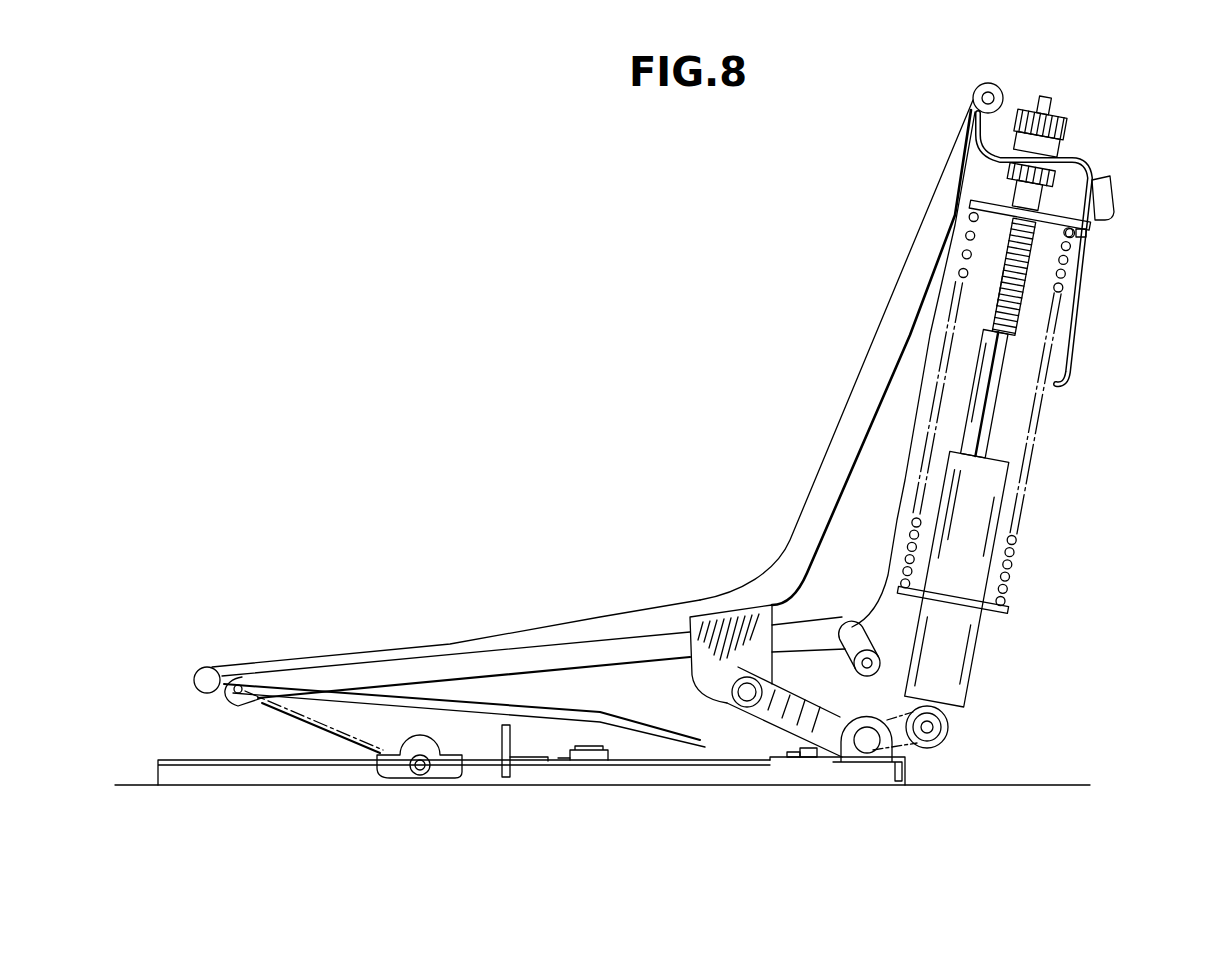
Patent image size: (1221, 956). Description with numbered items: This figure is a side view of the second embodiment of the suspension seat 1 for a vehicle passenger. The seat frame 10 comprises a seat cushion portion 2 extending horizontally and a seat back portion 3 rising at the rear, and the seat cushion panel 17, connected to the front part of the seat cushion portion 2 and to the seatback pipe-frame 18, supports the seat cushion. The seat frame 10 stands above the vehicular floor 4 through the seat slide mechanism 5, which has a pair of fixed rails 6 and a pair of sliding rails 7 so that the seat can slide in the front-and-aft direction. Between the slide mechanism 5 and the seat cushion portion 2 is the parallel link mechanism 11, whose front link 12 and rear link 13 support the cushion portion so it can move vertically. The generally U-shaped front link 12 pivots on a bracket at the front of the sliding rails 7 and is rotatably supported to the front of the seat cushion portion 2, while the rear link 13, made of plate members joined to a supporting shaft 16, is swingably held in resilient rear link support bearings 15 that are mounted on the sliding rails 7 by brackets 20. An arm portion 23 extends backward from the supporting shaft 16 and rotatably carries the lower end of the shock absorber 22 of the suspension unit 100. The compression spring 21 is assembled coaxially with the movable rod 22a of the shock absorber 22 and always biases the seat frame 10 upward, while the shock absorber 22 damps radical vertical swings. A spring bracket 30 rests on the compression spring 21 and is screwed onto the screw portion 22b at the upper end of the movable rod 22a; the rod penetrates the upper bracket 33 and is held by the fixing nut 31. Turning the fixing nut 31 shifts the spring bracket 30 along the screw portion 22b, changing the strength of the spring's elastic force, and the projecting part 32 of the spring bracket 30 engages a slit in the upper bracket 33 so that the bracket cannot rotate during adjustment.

The suspension seat 1 is at (600, 376).
The seat cushion portion 2 is at (440, 636).
The seat back portion 3 is at (882, 310).
The vehicular floor 4 is at (1027, 785).
The seat slide mechanism 5 is at (491, 790).
The fixed rails 6 is at (343, 776).
The sliding rails 7 is at (782, 773).
The seat frame 10 is at (770, 578).
The parallel link mechanism 11 is at (250, 705).
The front link 12 is at (293, 717).
The rear link 13 is at (833, 743).
The rear link support bearings 15 is at (850, 753).
The supporting shaft 16 is at (865, 742).
The seat cushion panel 17 is at (503, 697).
The seatback pipe-frame 18 is at (883, 663).
The brackets 20 is at (892, 740).
The compression spring 21 is at (1027, 463).
The shock absorber 22 is at (987, 510).
The movable rod 22a is at (995, 397).
The screw portion 22b is at (1020, 300).
The arm portion 23 is at (907, 737).
The spring bracket 30 is at (1043, 227).
The fixing nut 31 is at (1062, 121).
The projecting part 32 is at (1078, 237).
The upper bracket 33 is at (1064, 163).
The suspension unit 100 is at (980, 644).